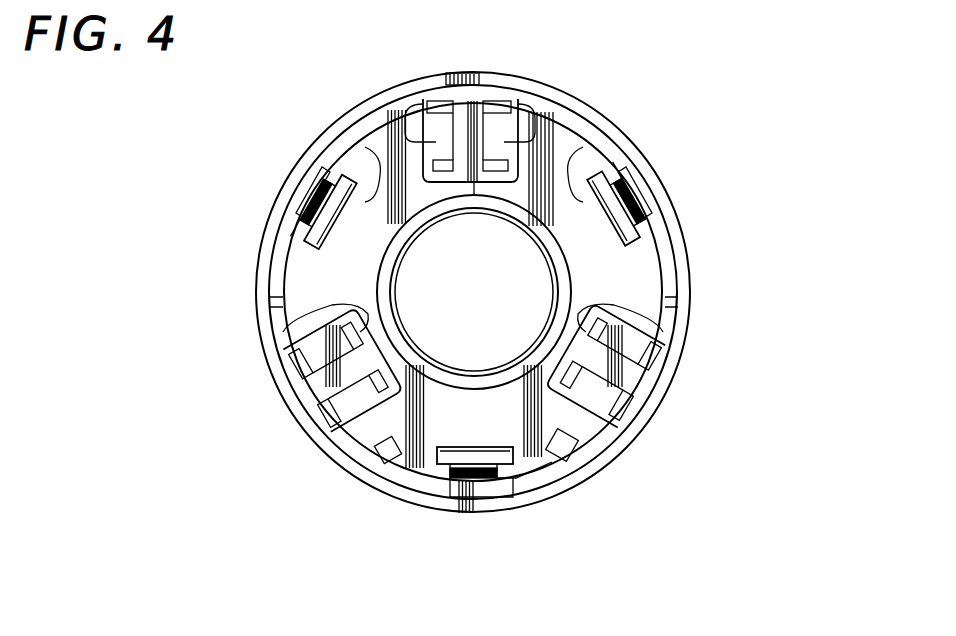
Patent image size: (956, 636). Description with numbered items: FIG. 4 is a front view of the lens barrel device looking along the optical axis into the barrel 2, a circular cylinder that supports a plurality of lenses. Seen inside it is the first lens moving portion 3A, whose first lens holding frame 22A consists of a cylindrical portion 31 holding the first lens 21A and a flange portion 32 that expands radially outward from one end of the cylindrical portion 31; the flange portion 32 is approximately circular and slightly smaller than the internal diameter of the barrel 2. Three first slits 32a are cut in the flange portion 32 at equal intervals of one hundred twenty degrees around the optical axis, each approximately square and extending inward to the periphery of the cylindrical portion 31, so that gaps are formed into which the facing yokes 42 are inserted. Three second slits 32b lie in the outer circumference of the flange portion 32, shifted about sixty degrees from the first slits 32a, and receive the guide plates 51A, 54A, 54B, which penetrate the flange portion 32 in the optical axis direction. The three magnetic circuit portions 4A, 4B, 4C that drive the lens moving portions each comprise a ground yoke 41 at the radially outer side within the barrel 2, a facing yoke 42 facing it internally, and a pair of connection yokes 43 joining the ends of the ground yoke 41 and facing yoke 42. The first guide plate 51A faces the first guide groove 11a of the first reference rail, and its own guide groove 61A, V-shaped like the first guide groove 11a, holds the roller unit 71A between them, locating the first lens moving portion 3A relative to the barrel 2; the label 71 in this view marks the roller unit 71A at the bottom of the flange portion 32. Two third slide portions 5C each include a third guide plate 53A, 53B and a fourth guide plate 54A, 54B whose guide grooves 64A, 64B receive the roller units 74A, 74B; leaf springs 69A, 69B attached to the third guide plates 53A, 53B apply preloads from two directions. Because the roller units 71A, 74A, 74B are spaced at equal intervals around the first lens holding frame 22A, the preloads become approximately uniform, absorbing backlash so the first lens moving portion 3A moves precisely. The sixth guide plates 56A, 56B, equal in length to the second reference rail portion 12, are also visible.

The barrel 2 is at (660, 455).
The first lens moving portion 3A is at (332, 278).
The first magnetic circuit portion 4A is at (469, 150).
The second magnetic circuit portion 4B is at (625, 360).
The third magnetic circuit portion 4C is at (318, 398).
The third slide portion 5C is at (679, 213).
The first guide groove 11a is at (485, 485).
The second reference rail portion 12 is at (283, 248).
The first lens 21A is at (690, 268).
The first lens holding frame 22A is at (394, 108).
The cylindrical portion 31 is at (463, 377).
The flange portion 32 is at (375, 452).
The first slit 32a is at (332, 305).
The second slit 32b is at (385, 180).
The ground yoke 41 is at (458, 99).
The facing yoke 42 is at (497, 163).
The connection yoke 43 is at (439, 102).
The first guide plate 51A is at (521, 473).
The third guide plate 53A is at (672, 194).
The third guide plate 53B is at (298, 186).
The fourth guide plate 54A is at (607, 177).
The fourth guide plate 54B is at (290, 200).
The sixth guide plate 56A is at (557, 480).
The sixth guide plate 56B is at (607, 177).
The guide groove 61A is at (497, 458).
The guide groove 64A is at (612, 225).
The guide groove 64B is at (336, 222).
The leaf spring 69A is at (653, 200).
The leaf spring 69B is at (296, 196).
The sensor unit 71 is at (456, 490).
The roller unit 71A is at (455, 470).
The roller unit 74A is at (645, 192).
The roller unit 74B is at (275, 214).